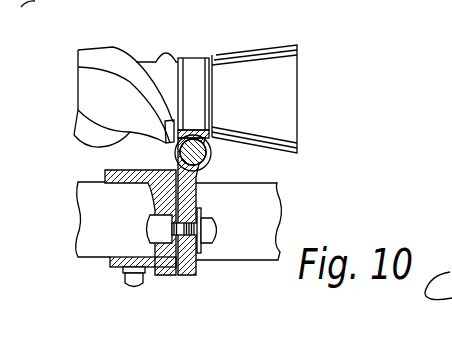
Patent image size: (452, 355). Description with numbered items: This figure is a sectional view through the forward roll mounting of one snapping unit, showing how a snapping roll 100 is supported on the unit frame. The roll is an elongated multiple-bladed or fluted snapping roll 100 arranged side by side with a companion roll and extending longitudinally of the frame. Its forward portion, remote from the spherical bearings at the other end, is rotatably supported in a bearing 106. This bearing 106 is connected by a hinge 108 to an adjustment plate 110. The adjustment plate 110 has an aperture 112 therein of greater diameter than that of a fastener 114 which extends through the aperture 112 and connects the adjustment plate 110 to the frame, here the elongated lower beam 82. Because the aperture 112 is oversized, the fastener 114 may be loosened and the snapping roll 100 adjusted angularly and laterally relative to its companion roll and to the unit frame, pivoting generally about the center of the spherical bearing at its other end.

The lower beam 82 is at (277, 185).
The snapping roll 100 is at (278, 93).
The bearing 106 is at (193, 67).
The hinge 108 is at (212, 163).
The adjustment plate 110 is at (197, 272).
The aperture 112 is at (201, 216).
The fastener 114 is at (155, 247).